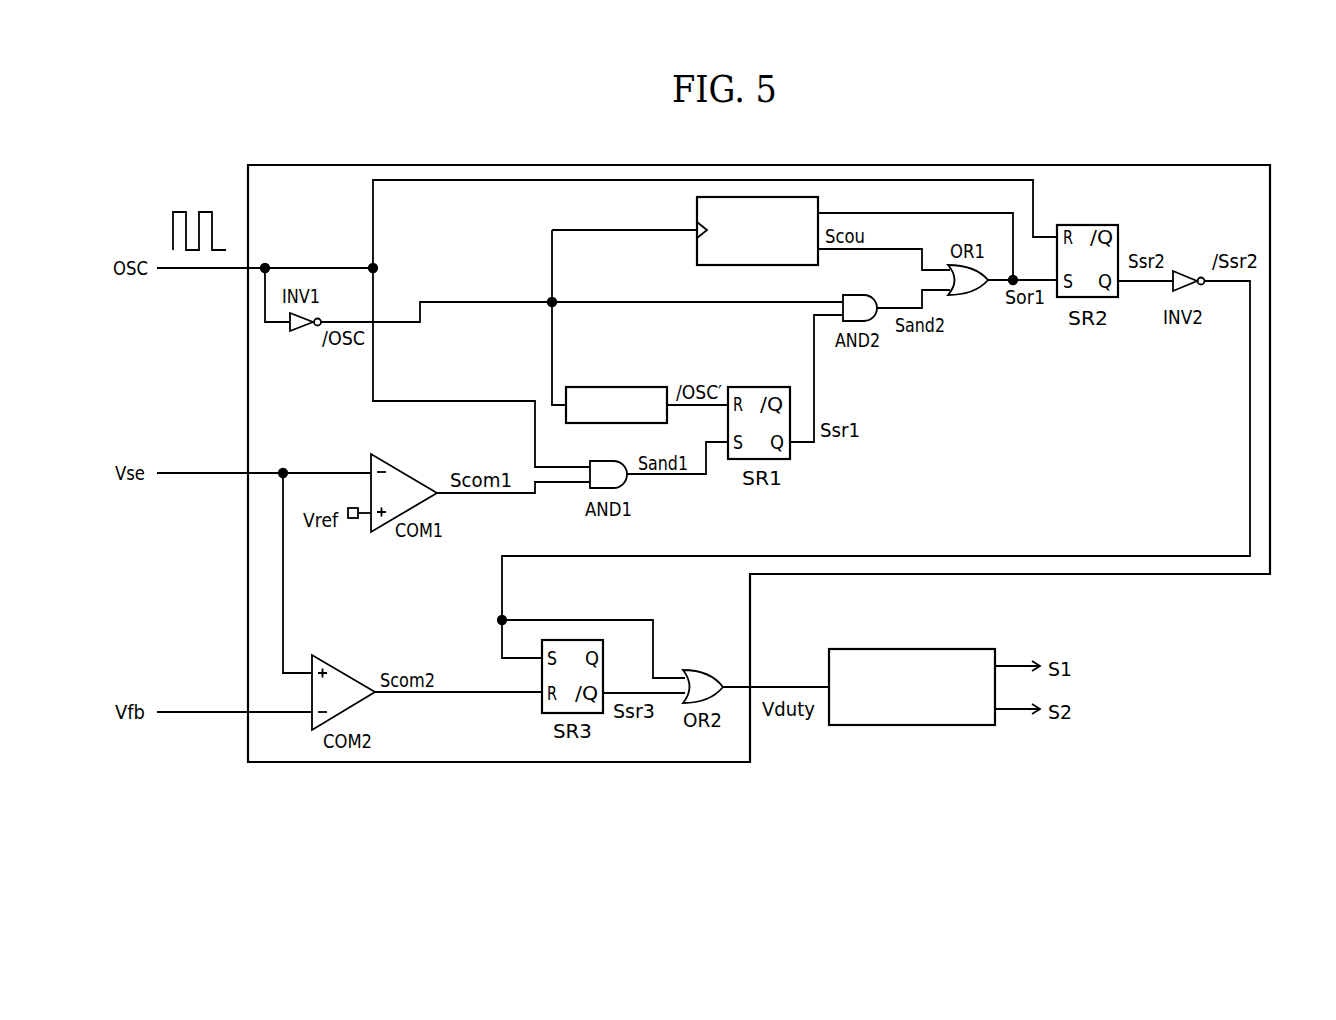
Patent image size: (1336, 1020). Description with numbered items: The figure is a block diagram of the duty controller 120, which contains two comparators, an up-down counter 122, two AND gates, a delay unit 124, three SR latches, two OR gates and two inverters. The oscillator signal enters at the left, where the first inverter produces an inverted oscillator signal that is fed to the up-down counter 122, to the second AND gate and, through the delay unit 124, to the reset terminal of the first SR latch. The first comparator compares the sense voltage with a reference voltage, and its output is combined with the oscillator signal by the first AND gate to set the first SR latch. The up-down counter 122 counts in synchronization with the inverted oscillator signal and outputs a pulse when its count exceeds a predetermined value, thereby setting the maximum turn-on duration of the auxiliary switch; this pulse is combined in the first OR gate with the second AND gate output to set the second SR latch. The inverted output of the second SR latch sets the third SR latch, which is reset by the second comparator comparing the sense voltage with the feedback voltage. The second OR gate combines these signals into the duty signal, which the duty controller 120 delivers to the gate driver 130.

The duty controller 120 is at (1101, 165).
The up-down counter 122 is at (697, 253).
The delay unit 124 is at (618, 387).
The gate driver 130 is at (940, 649).